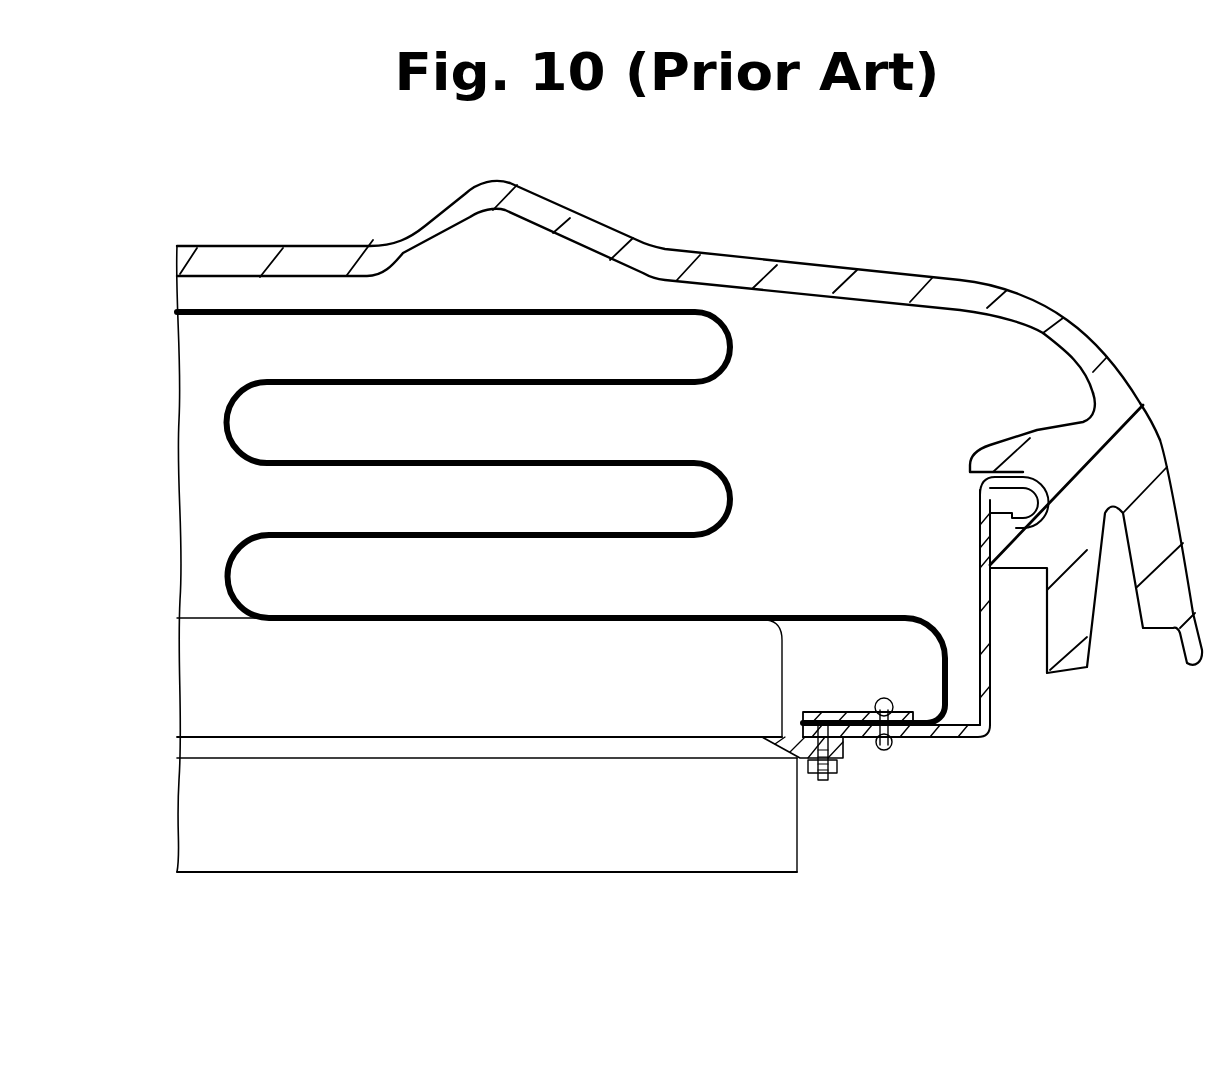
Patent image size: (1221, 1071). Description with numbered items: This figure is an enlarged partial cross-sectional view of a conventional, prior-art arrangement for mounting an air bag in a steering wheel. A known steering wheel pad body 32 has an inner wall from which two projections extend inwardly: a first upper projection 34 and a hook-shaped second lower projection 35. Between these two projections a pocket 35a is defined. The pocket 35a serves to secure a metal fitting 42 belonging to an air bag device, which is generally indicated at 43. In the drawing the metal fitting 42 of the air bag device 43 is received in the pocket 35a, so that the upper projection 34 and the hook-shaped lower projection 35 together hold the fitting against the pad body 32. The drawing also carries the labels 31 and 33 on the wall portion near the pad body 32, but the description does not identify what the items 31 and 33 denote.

The cabinet wall assembly 31 is at (689, 427).
The steering wheel pad body 32 is at (668, 326).
The inner member 33 is at (1152, 425).
The first upper projection 34 is at (993, 453).
The hook-shaped second lower projection 35 is at (998, 538).
The pocket 35a is at (995, 500).
The metal fitting 42 is at (987, 710).
The air bag device 43 is at (787, 524).